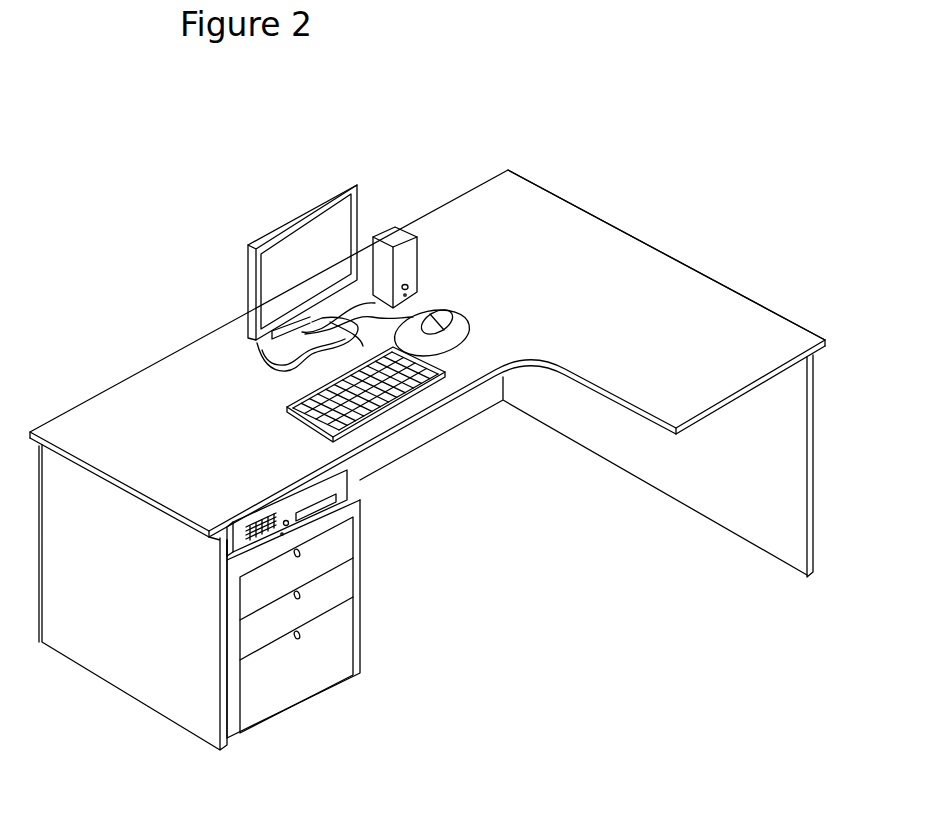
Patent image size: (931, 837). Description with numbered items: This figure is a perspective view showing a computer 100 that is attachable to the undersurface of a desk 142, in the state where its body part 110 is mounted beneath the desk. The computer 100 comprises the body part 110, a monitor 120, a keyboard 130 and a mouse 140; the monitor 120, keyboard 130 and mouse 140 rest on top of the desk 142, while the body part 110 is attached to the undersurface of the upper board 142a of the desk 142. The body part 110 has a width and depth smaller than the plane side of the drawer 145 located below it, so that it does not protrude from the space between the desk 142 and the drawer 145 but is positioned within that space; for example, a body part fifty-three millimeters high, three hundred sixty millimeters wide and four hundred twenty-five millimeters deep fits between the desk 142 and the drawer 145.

The computer 100 is at (381, 179).
The body part 110 is at (279, 524).
The monitor 120 is at (295, 222).
The keyboard 130 is at (395, 388).
The mouse 140 is at (445, 313).
The desk 142 is at (705, 269).
The upper board 142a is at (632, 248).
The drawer 145 is at (313, 660).